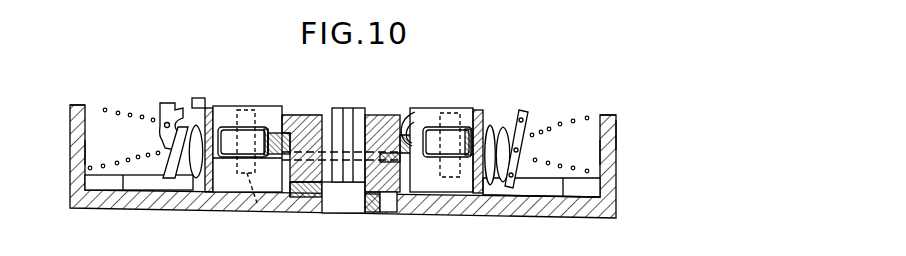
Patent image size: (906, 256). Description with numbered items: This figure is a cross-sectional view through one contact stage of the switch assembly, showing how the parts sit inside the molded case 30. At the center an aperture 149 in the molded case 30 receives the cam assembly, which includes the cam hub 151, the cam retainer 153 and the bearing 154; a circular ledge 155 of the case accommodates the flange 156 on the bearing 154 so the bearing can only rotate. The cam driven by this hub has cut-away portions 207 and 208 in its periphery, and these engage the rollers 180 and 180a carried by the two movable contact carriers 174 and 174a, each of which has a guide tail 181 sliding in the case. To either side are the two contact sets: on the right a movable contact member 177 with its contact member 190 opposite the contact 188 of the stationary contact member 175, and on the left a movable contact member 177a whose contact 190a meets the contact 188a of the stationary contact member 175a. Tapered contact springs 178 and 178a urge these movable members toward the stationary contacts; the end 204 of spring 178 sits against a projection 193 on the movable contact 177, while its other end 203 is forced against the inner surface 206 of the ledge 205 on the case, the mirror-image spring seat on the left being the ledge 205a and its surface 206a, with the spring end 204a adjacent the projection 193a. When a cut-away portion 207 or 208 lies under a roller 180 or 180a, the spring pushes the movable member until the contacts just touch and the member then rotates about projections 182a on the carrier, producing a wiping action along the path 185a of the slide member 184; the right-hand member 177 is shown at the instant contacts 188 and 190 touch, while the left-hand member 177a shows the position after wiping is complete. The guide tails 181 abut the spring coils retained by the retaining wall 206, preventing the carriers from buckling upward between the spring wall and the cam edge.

The molded case 30 is at (440, 209).
The aperture 149 is at (398, 215).
The cam hub 151 is at (390, 114).
The cam retainer 153 is at (392, 194).
The bearing 154 is at (316, 190).
The circular ledge 155 is at (291, 197).
The flange 156 is at (323, 183).
The movable contact carrier 174 is at (430, 108).
The movable contact carrier 174a is at (226, 106).
The stationary contact member 175 is at (476, 194).
The stationary contact member 175a is at (208, 108).
The movable contact member 177 is at (525, 125).
The movable contact member 177a is at (170, 178).
The contact spring 178 is at (560, 124).
The contact spring 178a is at (105, 108).
The roller 180 is at (410, 128).
The roller 180a is at (276, 128).
The guide tail 181 is at (548, 187).
The projections 182a is at (181, 106).
The left slide member 184 is at (248, 110).
The slide path 185a is at (269, 203).
The contact 188 is at (470, 127).
The contact 188a is at (218, 190).
The contact member 190 is at (503, 108).
The contact 190a is at (193, 180).
The projection 193 is at (528, 150).
The left lower perforations 193a is at (160, 138).
The end of contact spring 203 is at (606, 118).
The end of contact spring 204 is at (520, 196).
The left floor strip 204a is at (163, 158).
The ledge 205 is at (610, 133).
The left wall top 205a is at (80, 104).
The inner surface 206 is at (602, 150).
The left wall inner face 206a is at (84, 152).
The cut-away portion 207 is at (298, 115).
The cut-away portion 208 is at (397, 127).